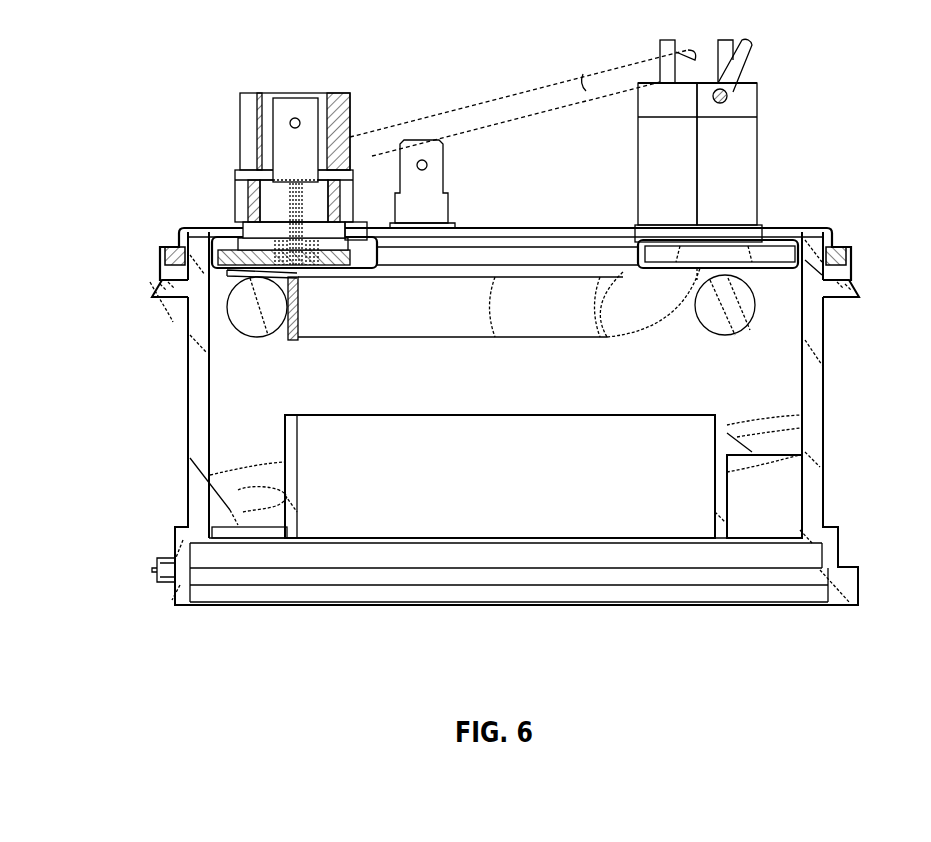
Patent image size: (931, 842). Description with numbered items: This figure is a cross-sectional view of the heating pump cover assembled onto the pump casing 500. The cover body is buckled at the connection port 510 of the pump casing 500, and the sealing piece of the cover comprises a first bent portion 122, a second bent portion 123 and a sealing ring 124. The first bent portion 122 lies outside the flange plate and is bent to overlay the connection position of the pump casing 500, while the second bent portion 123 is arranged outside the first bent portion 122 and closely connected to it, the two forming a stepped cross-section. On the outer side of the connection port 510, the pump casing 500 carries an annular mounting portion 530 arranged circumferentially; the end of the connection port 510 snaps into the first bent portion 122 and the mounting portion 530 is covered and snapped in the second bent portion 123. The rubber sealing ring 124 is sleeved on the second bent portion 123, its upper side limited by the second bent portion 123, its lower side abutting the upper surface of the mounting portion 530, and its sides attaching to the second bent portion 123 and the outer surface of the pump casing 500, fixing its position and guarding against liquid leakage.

The pump casing 500 is at (190, 422).
The connection port 510 is at (203, 230).
The mounting portion 530 is at (171, 290).
The first bent portion 122 is at (182, 228).
The second bent portion 123 is at (165, 243).
The sealing ring 124 is at (165, 256).